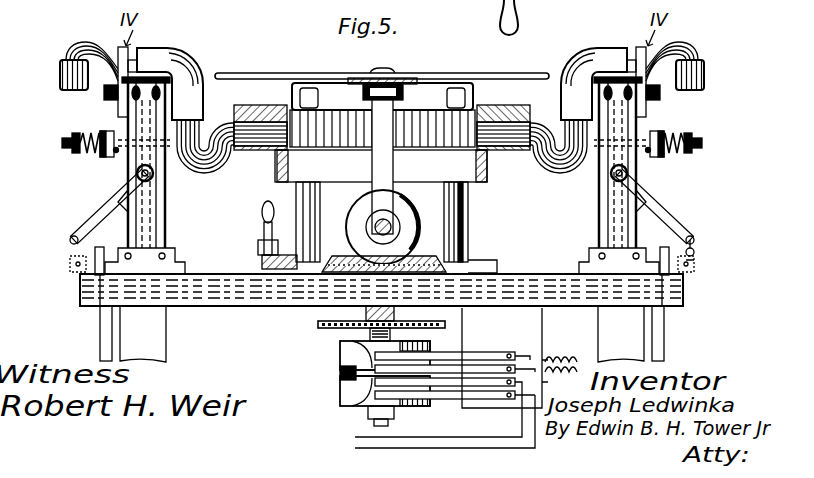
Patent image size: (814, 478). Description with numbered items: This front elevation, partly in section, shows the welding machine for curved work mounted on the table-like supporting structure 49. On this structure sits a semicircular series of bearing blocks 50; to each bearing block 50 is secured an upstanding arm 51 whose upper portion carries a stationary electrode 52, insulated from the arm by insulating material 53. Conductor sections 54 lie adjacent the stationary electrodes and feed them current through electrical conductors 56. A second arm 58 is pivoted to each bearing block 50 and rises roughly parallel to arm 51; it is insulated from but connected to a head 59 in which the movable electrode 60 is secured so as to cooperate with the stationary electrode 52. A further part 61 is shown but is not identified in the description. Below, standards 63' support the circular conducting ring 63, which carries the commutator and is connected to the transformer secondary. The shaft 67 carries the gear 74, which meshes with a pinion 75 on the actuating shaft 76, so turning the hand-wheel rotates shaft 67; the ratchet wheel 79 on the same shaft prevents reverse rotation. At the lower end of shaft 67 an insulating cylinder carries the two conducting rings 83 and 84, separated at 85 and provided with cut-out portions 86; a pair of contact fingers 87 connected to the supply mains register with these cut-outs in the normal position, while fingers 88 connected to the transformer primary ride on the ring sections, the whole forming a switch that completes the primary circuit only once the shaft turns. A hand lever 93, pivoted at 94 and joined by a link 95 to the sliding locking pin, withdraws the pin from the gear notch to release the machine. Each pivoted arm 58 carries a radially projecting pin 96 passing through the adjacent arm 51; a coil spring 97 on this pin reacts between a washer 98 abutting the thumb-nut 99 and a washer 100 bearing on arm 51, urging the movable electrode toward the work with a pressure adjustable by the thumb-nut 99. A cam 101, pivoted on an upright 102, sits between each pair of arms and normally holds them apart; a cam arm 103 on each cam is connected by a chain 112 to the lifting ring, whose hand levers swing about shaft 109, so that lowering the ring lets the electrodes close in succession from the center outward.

The supporting structure 49 is at (684, 291).
The bearing block 50 is at (172, 262).
The upstanding arm 51 is at (128, 198).
The stationary electrode 52 is at (108, 92).
The insulating material 53 is at (152, 81).
The conductor section 54 is at (60, 76).
The electrical conductor 56 is at (78, 47).
The pivoted arm 58 is at (166, 199).
The head 59 is at (176, 48).
The movable electrode 60 is at (216, 170).
The core 61 is at (262, 156).
The conducting ring 63 is at (397, 175).
The standard 63' is at (407, 222).
The shaft 67 is at (394, 72).
The gear 74 is at (436, 258).
The pinion 75 is at (404, 221).
The actuating shaft 76 is at (376, 228).
The ratchet wheel 79 is at (318, 324).
The conducting ring 83 is at (340, 362).
The conducting ring 84 is at (352, 392).
The separation 85 is at (340, 376).
The cut-out portion 86 is at (352, 352).
The contact finger 87 is at (478, 384).
The contact finger 88 is at (463, 358).
The hand lever 93 is at (262, 208).
The pivot 94 is at (258, 275).
The link 95 is at (262, 238).
The radially projecting pin 96 is at (144, 141).
The coil spring 97 is at (93, 134).
The washer 98 is at (78, 152).
The thumb-nut 99 is at (62, 144).
The washer 100 is at (114, 152).
The cam 101 is at (154, 174).
The upright 102 is at (146, 223).
The cam arm 103 is at (118, 200).
The shaft 109 is at (694, 264).
The chain 112 is at (696, 259).